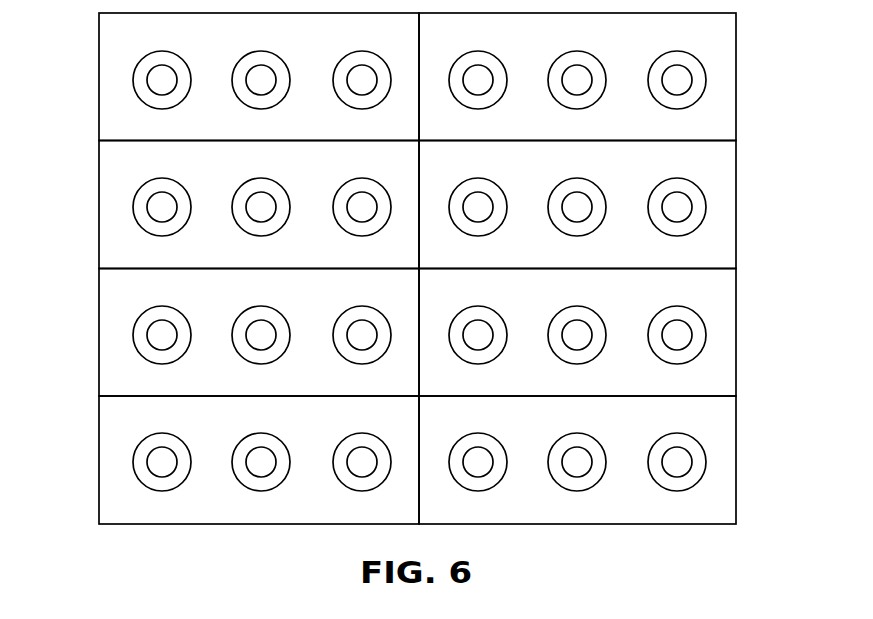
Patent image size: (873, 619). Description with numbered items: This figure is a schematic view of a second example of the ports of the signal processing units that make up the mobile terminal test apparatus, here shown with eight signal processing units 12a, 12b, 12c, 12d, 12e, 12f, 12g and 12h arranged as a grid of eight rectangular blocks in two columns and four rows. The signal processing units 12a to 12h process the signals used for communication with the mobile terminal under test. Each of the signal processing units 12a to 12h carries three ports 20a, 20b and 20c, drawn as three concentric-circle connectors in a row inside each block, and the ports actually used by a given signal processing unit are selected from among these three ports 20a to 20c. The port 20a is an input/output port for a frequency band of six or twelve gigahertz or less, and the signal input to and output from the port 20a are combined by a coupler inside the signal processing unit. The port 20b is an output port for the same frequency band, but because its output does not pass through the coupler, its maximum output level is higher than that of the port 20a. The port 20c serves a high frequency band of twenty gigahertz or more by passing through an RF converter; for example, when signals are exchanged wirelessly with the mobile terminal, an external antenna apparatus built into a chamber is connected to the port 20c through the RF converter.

The signal processing unit 12a is at (99, 436).
The signal processing unit 12b is at (736, 499).
The signal processing unit 12c is at (99, 303).
The signal processing unit 12d is at (736, 369).
The signal processing unit 12e is at (99, 171).
The signal processing unit 12f is at (736, 241).
The signal processing unit 12g is at (99, 37).
The signal processing unit 12h is at (736, 114).
The port 20a is at (333, 85).
The port 20b is at (232, 85).
The port 20c is at (133, 85).